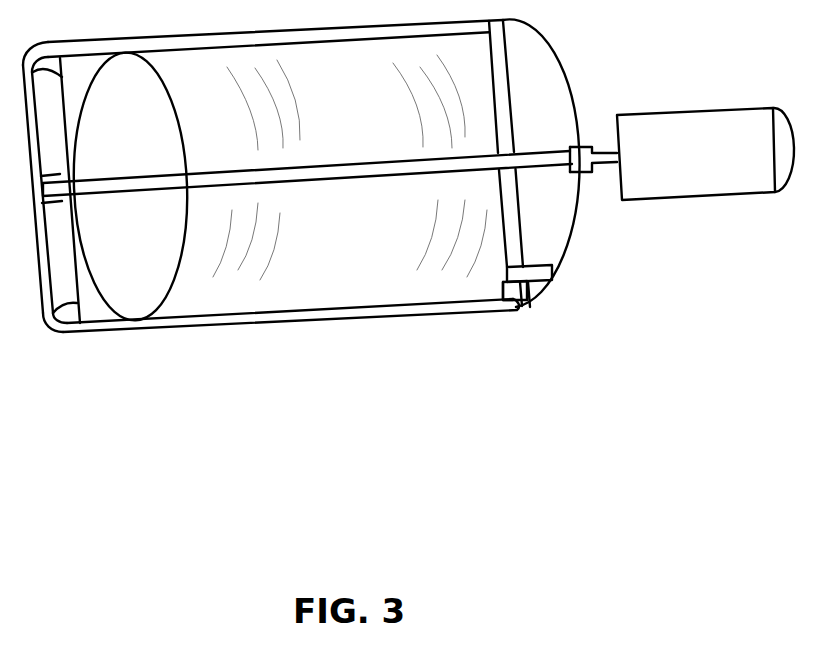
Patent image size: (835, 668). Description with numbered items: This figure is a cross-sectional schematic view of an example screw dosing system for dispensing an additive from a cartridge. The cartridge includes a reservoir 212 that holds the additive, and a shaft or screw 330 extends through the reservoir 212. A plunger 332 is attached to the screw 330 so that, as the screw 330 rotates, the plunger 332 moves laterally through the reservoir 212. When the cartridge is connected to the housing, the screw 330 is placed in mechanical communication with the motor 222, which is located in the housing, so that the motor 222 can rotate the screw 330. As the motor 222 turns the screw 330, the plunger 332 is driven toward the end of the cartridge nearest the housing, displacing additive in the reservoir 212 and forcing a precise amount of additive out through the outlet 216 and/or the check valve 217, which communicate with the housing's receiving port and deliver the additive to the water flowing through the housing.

The reservoir 212 is at (372, 261).
The outlet 216 is at (562, 276).
The check valve 217 is at (537, 289).
The motor 222 is at (740, 194).
The screw 330 is at (390, 163).
The plunger 332 is at (157, 312).